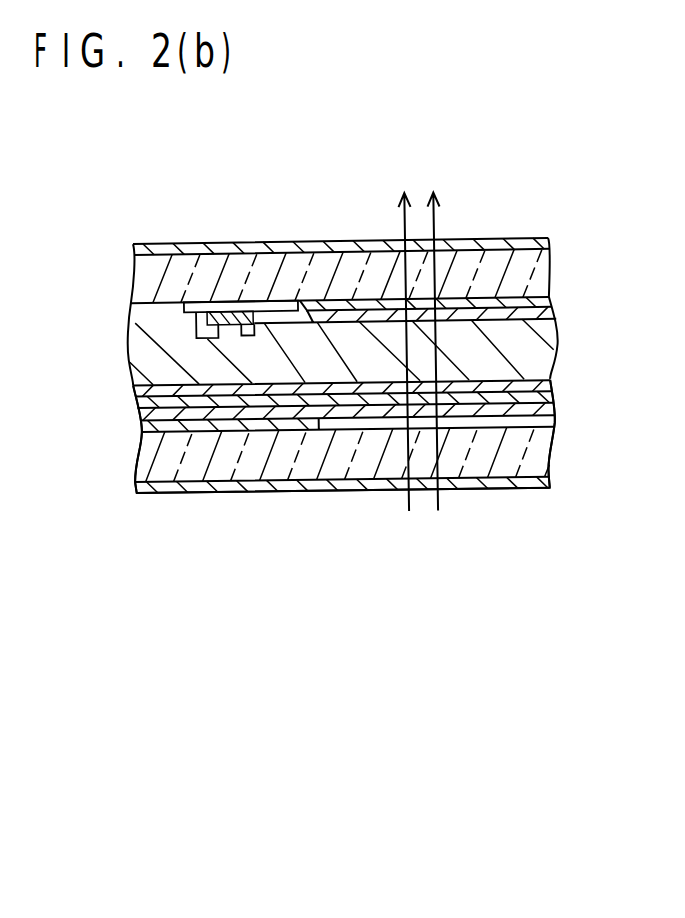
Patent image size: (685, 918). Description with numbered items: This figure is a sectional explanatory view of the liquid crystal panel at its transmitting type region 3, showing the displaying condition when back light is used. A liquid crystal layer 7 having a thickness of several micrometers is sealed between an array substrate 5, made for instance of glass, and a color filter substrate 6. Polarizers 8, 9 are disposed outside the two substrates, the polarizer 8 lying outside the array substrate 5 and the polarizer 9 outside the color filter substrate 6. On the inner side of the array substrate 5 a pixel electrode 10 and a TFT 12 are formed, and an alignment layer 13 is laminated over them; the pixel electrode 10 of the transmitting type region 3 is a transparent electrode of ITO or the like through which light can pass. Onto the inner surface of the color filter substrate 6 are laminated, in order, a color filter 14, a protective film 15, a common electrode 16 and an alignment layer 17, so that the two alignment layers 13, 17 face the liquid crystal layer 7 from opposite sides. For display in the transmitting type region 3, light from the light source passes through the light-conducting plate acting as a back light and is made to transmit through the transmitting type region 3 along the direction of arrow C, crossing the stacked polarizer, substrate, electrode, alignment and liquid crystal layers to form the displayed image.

The transmitting type region 3 is at (221, 205).
The arrow C is at (403, 228).
The polarizer 9 is at (485, 247).
The array substrate 5 is at (520, 268).
The pixel electrode 10 is at (523, 303).
The alignment layer 13 is at (533, 315).
The liquid crystal layer 7 is at (523, 349).
The TFT 12 is at (173, 344).
The alignment layer 17 is at (507, 383).
The common electrode 16 is at (535, 396).
The protective film 15 is at (537, 411).
The color filter 14 is at (518, 458).
The polarizer 8 is at (513, 483).
The color filter substrate 6 is at (552, 468).